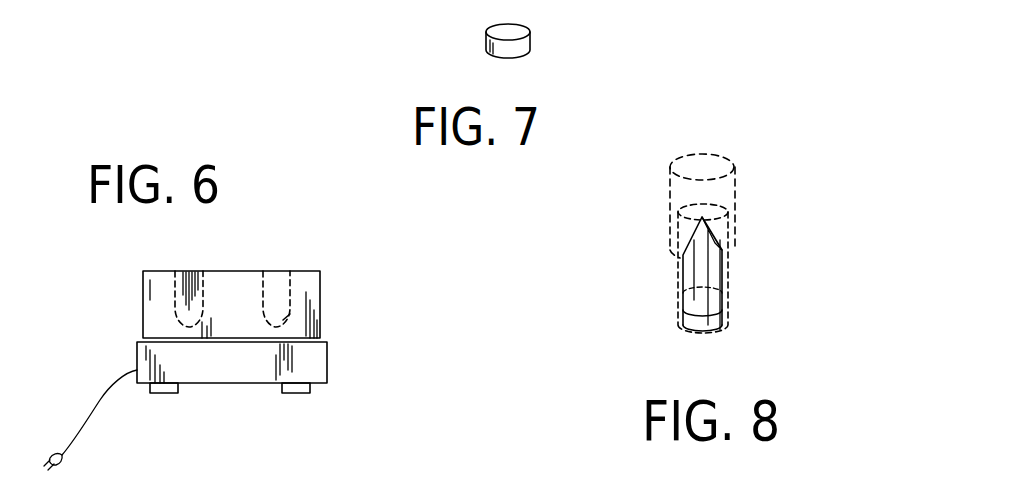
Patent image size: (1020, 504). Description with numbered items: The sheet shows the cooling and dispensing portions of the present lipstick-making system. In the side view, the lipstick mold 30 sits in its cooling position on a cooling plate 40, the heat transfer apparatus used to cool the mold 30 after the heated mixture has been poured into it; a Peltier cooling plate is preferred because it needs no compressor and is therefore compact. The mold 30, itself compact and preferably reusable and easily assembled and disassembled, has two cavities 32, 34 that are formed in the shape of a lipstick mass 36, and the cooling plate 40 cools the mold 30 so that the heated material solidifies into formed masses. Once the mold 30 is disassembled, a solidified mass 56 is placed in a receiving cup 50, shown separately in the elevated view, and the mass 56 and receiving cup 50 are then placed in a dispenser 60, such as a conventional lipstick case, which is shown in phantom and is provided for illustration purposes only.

In FIG. 6, the lipstick mold 30 is at (300, 281).
In FIG. 6, the cavity 32 is at (185, 280).
In FIG. 6, the cavity 34 is at (278, 280).
In FIG. 6, the lipstick mass 36 is at (298, 318).
In FIG. 6, the cooling plate 40 is at (235, 370).
In FIG. 7, the receiving cup 50 is at (528, 42).
In FIG. 8, the receiving cup 50 is at (703, 320).
In FIG. 8, the mass 56 is at (702, 280).
In FIG. 8, the dispenser 60 is at (748, 182).